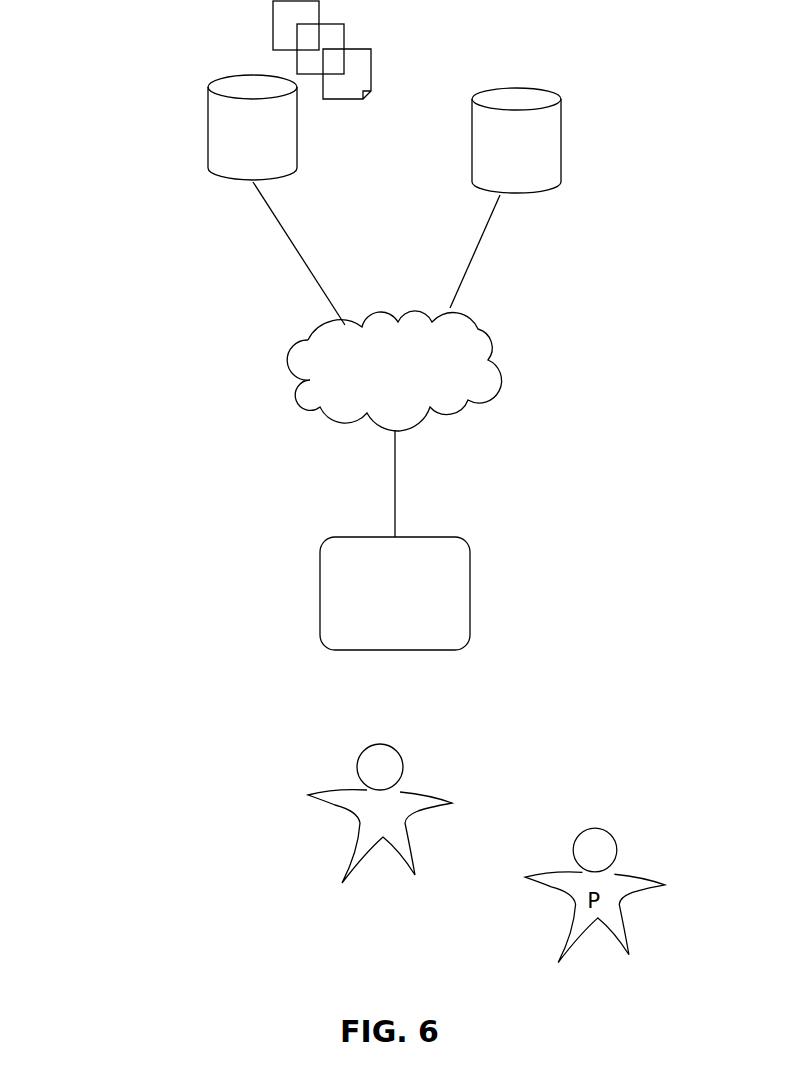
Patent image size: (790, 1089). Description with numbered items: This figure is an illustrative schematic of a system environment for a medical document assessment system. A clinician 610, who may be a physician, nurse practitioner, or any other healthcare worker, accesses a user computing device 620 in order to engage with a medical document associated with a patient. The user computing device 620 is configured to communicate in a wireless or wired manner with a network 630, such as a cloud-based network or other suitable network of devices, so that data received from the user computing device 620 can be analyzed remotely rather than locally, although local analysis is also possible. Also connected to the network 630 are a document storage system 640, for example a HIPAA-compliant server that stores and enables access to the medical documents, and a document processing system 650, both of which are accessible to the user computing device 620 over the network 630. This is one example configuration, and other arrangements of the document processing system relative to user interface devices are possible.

The clinician 610 is at (402, 750).
The user computing device 620 is at (320, 597).
The network 630 is at (410, 386).
The document storage system 640 is at (210, 143).
The document processing system 650 is at (562, 135).